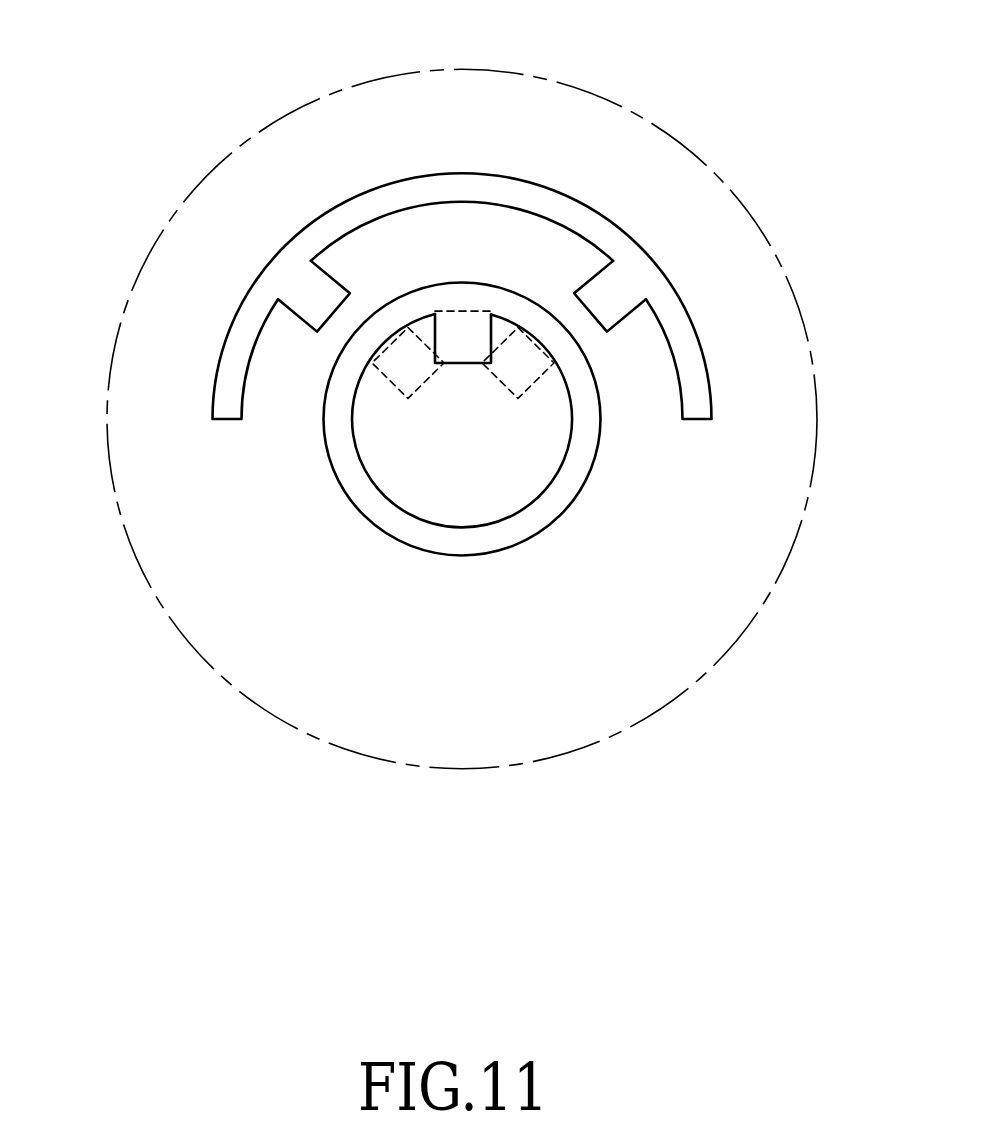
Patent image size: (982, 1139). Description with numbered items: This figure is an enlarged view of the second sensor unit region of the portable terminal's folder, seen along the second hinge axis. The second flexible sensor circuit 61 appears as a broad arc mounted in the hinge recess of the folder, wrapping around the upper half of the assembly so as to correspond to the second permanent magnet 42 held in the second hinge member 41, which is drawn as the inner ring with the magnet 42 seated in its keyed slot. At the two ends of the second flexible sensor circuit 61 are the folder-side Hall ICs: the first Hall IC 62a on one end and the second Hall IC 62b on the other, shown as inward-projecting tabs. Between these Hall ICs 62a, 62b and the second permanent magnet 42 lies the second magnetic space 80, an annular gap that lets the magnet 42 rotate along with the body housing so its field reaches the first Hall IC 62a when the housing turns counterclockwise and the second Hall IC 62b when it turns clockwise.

The second flexible sensor circuit 61 is at (492, 188).
The first Hall IC 62a is at (318, 302).
The second Hall IC 62b is at (623, 293).
The second magnetic space 80 is at (538, 247).
The second hinge member 41 is at (540, 513).
The second permanent magnet 42 is at (473, 339).